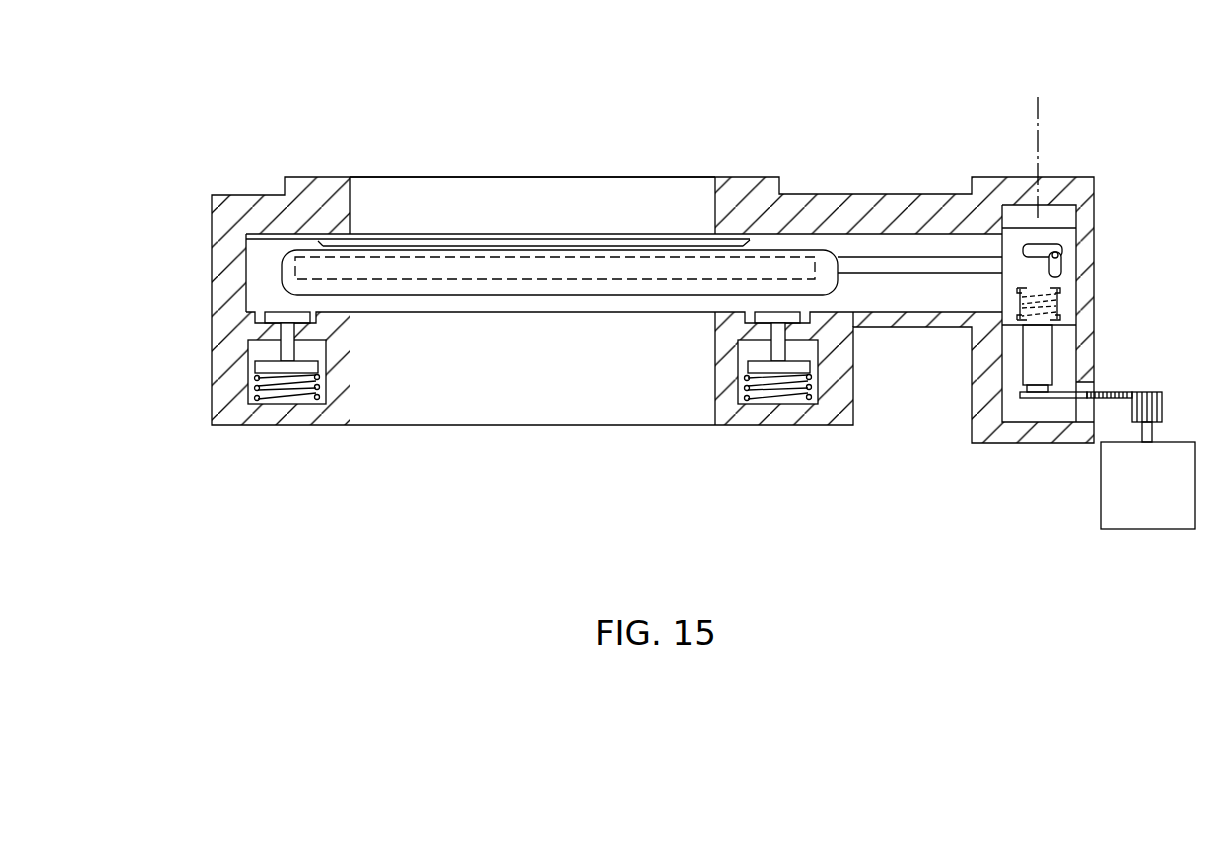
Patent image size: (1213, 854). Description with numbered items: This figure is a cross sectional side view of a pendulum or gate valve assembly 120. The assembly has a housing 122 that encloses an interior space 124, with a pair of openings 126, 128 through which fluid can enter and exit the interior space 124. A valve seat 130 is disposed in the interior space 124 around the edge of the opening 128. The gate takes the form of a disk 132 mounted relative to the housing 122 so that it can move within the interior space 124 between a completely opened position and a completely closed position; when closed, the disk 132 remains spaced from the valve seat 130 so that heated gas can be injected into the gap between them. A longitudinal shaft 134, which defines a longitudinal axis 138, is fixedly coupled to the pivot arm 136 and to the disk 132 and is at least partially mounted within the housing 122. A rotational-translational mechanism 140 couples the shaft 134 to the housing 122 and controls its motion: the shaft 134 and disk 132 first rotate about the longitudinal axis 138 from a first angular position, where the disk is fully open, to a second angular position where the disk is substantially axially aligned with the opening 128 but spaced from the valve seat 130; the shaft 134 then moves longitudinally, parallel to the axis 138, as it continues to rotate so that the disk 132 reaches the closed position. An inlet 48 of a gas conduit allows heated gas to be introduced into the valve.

The pendulum or gate valve assembly 120 is at (665, 112).
The housing 122 is at (212, 294).
The interior space 124 is at (267, 280).
The opening 126 is at (350, 187).
The opening 128 is at (352, 424).
The valve seat 130 is at (338, 304).
The disk 132 is at (627, 296).
The longitudinal shaft 134 is at (1052, 343).
The pivot arm 136 is at (872, 274).
The longitudinal axis 138 is at (1038, 134).
The rotational-translational mechanism 140 is at (1064, 267).
The inlet 48 is at (1101, 487).